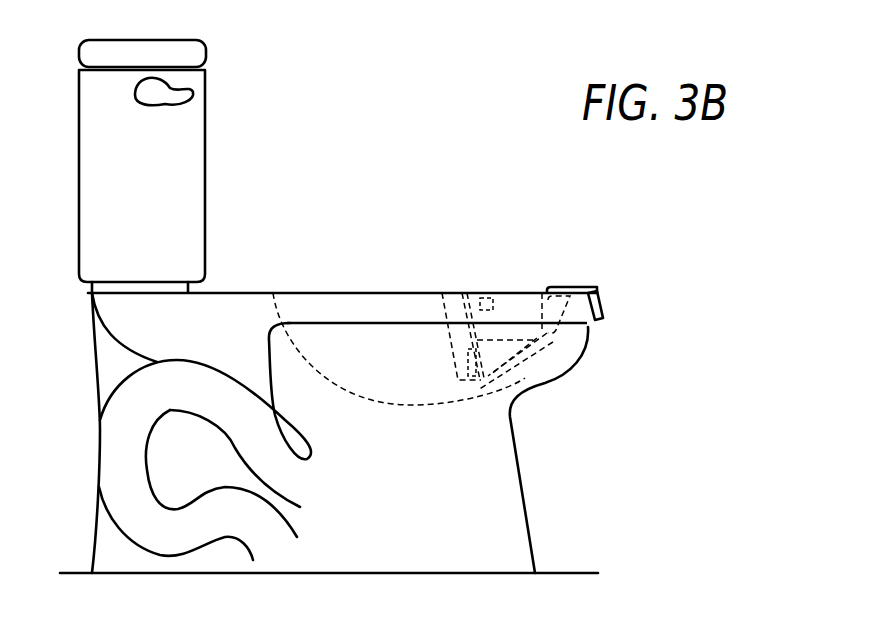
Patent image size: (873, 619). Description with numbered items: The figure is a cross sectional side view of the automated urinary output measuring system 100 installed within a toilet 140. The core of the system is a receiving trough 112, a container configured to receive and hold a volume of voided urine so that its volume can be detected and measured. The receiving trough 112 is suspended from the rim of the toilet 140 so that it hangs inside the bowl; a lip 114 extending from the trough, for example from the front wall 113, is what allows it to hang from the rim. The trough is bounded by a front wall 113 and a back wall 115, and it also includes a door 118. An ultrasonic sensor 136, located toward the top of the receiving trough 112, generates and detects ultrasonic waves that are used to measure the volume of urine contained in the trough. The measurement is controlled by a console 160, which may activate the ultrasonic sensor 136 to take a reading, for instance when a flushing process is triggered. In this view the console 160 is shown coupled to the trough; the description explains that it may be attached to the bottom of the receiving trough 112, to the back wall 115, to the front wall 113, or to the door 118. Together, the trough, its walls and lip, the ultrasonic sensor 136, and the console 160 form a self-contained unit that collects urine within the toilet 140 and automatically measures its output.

The automated urinary output measuring system 100 is at (385, 150).
The toilet 140 is at (251, 300).
The console 160 is at (450, 316).
The back wall 115 is at (468, 302).
The ultrasonic sensor 136 is at (494, 302).
The lip 114 is at (562, 292).
The front wall 113 is at (584, 303).
The door 118 is at (462, 367).
The receiving trough 112 is at (530, 345).